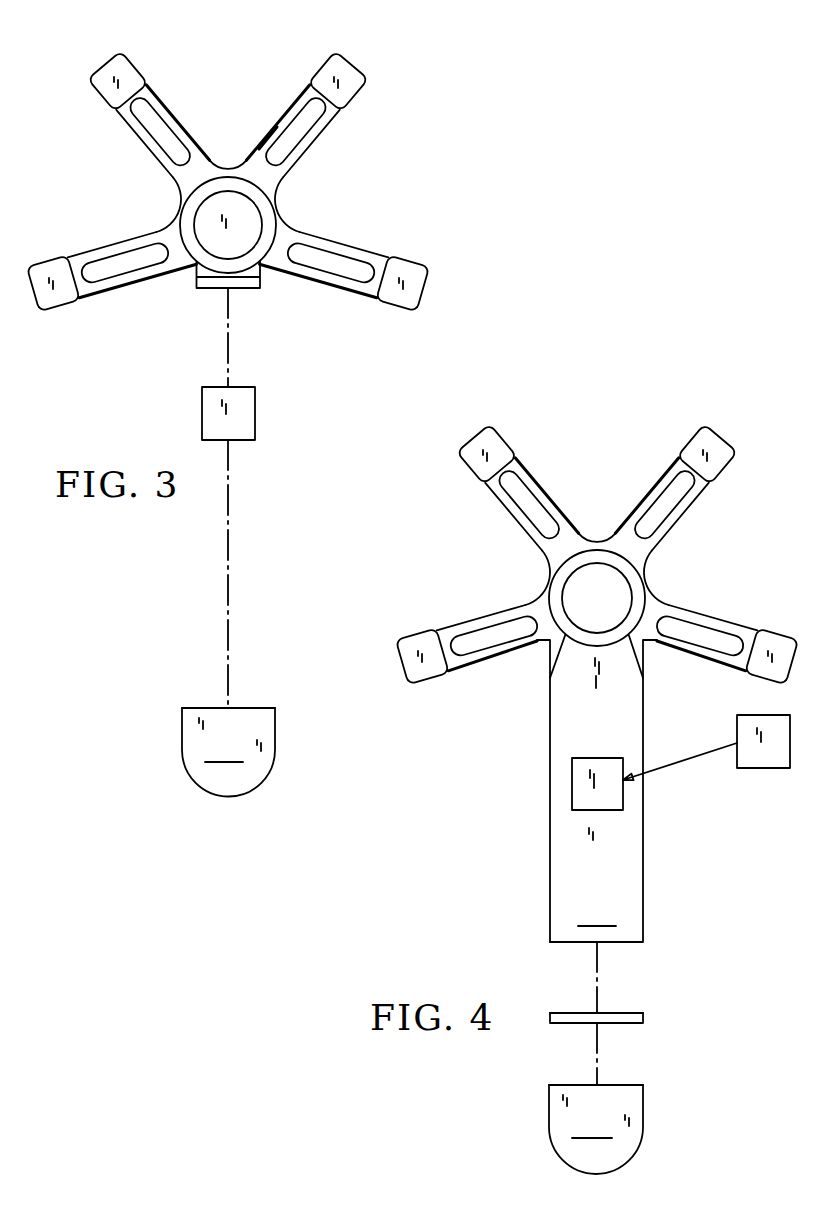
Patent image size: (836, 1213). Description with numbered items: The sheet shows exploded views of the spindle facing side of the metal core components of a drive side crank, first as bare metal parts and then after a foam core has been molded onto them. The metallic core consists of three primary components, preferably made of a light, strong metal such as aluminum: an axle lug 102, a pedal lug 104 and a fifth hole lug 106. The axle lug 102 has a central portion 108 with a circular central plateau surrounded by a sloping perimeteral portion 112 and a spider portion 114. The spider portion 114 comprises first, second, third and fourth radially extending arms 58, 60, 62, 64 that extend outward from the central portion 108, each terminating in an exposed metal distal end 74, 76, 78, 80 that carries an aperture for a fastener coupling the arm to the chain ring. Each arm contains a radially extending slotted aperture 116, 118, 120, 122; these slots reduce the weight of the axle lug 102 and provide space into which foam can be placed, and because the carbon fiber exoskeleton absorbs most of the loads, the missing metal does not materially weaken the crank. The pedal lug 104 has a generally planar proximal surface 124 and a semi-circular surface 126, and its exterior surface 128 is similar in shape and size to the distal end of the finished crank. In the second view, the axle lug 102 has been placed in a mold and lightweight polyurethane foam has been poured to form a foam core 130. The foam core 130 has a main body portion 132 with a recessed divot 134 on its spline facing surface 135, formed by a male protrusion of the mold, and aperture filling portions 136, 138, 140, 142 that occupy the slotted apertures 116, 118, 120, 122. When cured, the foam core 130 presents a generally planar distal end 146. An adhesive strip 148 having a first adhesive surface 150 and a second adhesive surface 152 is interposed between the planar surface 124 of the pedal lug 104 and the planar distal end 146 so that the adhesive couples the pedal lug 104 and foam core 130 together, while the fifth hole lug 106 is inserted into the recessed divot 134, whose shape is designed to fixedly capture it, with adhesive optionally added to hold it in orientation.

In FIG. 3, the first radially extending arm 58 is at (115, 310).
In FIG. 3, the second radially extending arm 60 is at (131, 173).
In FIG. 3, the third radially extending arm 62 is at (268, 102).
In FIG. 3, the fourth radially extending arm 64 is at (329, 302).
In FIG. 3, the exposed metal distal end 74 is at (53, 317).
In FIG. 4, the exposed metal distal end 74 is at (385, 658).
In FIG. 3, the exposed metal distal end 76 is at (131, 58).
In FIG. 4, the exposed metal distal end 76 is at (477, 420).
In FIG. 3, the exposed metal distal end 78 is at (375, 84).
In FIG. 4, the exposed metal distal end 78 is at (682, 434).
In FIG. 3, the exposed metal distal end 80 is at (422, 246).
In FIG. 4, the exposed metal distal end 80 is at (788, 625).
In FIG. 3, the axle lug 102 is at (250, 216).
In FIG. 3, the pedal lug 104 is at (278, 742).
In FIG. 4, the pedal lug 104 is at (619, 1120).
In FIG. 3, the fifth hole lug 106 is at (277, 415).
In FIG. 4, the fifth hole lug 106 is at (754, 788).
In FIG. 3, the central portion 108 is at (204, 240).
In FIG. 3, the sloping perimeteral portion 112 is at (236, 178).
In FIG. 3, the spider portion 114 is at (280, 88).
In FIG. 3, the radially extending slotted aperture 116 is at (122, 252).
In FIG. 3, the radially extending slotted aperture 118 is at (141, 116).
In FIG. 3, the radially extending slotted aperture 120 is at (316, 120).
In FIG. 3, the radially extending slotted aperture 122 is at (334, 250).
In FIG. 3, the planar proximal surface 124 is at (246, 708).
In FIG. 4, the planar proximal surface 124 is at (568, 1085).
In FIG. 3, the semi-circular surface 126 is at (200, 794).
In FIG. 4, the semi-circular surface 126 is at (622, 1166).
In FIG. 3, the exterior surface 128 is at (230, 740).
In FIG. 4, the exterior surface 128 is at (596, 1116).
In FIG. 4, the foam core 130 is at (560, 639).
In FIG. 4, the main body portion 132 is at (641, 856).
In FIG. 4, the recessed divot 134 is at (575, 762).
In FIG. 4, the spline facing surface 135 is at (597, 913).
In FIG. 4, the aperture filling portion 136 is at (513, 622).
In FIG. 4, the aperture filling portion 138 is at (519, 486).
In FIG. 4, the aperture filling portion 140 is at (675, 496).
In FIG. 4, the aperture filling portion 142 is at (680, 623).
In FIG. 4, the planar distal end 146 is at (560, 945).
In FIG. 4, the adhesive strip 148 is at (616, 1009).
In FIG. 4, the first adhesive surface 150 is at (565, 1011).
In FIG. 4, the second adhesive surface 152 is at (605, 1023).